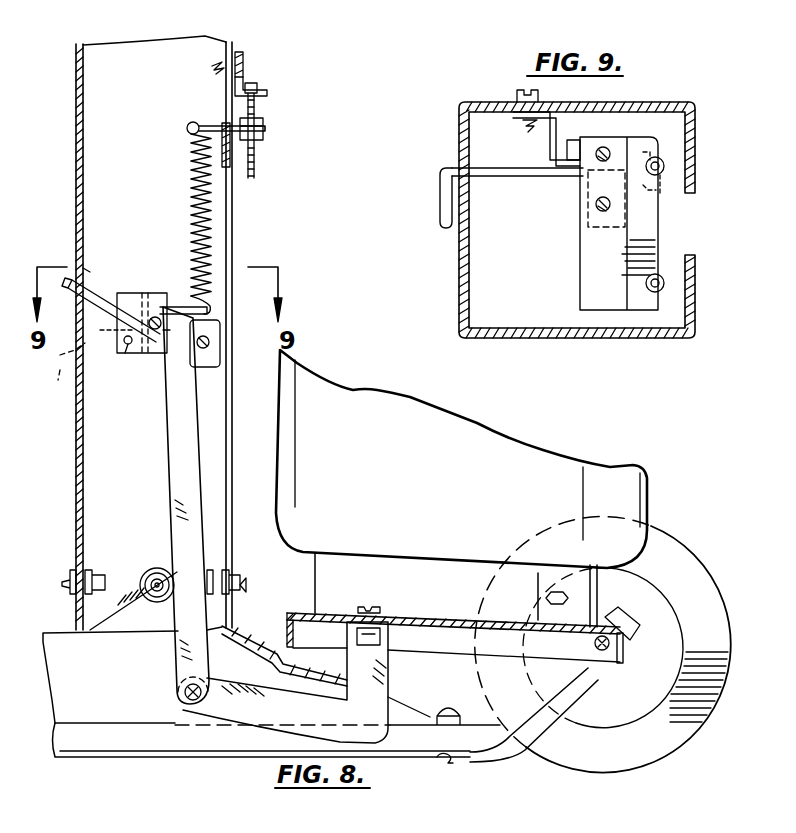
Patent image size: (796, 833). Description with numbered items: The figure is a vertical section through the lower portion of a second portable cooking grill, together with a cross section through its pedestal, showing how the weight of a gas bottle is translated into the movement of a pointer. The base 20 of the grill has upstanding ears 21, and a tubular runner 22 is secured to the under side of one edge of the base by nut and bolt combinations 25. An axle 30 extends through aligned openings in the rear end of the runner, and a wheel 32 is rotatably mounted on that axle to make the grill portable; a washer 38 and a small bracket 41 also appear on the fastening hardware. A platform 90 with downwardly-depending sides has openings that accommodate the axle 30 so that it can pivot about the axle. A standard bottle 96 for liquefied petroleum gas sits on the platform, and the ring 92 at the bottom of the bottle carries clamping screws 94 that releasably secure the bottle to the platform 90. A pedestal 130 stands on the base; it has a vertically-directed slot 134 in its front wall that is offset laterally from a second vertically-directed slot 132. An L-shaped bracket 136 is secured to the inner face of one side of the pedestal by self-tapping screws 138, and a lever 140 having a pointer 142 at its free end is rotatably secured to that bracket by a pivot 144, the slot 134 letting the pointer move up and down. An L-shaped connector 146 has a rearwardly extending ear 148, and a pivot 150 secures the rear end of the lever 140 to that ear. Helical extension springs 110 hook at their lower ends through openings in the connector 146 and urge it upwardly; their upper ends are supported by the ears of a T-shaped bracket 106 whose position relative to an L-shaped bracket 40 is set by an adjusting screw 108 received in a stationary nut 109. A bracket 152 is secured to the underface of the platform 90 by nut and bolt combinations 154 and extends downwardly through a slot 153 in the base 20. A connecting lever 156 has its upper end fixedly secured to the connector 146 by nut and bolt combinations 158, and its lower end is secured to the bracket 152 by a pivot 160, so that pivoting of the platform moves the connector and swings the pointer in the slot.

In FIG. 8, the base 20 is at (70, 628).
In FIG. 8, the upstanding ears 21 is at (88, 568).
In FIG. 8, the runner 22 is at (118, 745).
In FIG. 8, the nut and bolt combinations 25 is at (448, 760).
In FIG. 8, the axle 30 is at (606, 662).
In FIG. 8, the wheels 32 is at (665, 545).
In FIG. 8, the washer 38 is at (148, 600).
In FIG. 8, the L-shaped bracket 40 is at (262, 94).
In FIG. 8, the bracket tab 41 is at (245, 66).
In FIG. 8, the platform 90 is at (445, 621).
In FIG. 8, the ring 92 is at (315, 588).
In FIG. 8, the clamping screws 94 is at (568, 598).
In FIG. 8, the bottle 96 is at (457, 420).
In FIG. 8, the T-shaped bracket 106 is at (265, 130).
In FIG. 8, the adjusting screw 108 is at (258, 116).
In FIG. 8, the nut 109 is at (258, 145).
In FIG. 8, the helical extension springs 110 is at (190, 156).
In FIG. 9, the helical extension springs 110 is at (665, 166).
In FIG. 8, the pedestal 130 is at (76, 182).
In FIG. 9, the pedestal 130 is at (460, 262).
In FIG. 8, the vertically-directed slot 132 is at (233, 226).
In FIG. 9, the vertically-directed slot 132 is at (688, 255).
In FIG. 8, the vertically-directed slot 134 is at (84, 272).
In FIG. 9, the vertically-directed slot 134 is at (460, 165).
In FIG. 9, the L-shaped bracket 136 is at (548, 150).
In FIG. 8, the self-tapping screws 138 is at (128, 346).
In FIG. 9, the self-tapping screws 138 is at (516, 92).
In FIG. 8, the lever 140 is at (108, 300).
In FIG. 9, the lever 140 is at (510, 178).
In FIG. 8, the pointer 142 is at (70, 277).
In FIG. 9, the pointer 142 is at (443, 205).
In FIG. 8, the pivot 144 is at (153, 293).
In FIG. 9, the pivot 144 is at (578, 140).
In FIG. 8, the L-shaped connector 146 is at (163, 365).
In FIG. 9, the L-shaped connector 146 is at (592, 287).
In FIG. 8, the ear 148 is at (216, 365).
In FIG. 9, the ear 148 is at (662, 184).
In FIG. 8, the pivot 150 is at (216, 343).
In FIG. 9, the pivot 150 is at (665, 186).
In FIG. 8, the bracket 152 is at (240, 708).
In FIG. 8, the slot 153 is at (390, 690).
In FIG. 8, the nut and bolt combinations 154 is at (378, 608).
In FIG. 8, the connecting lever 156 is at (177, 509).
In FIG. 9, the connecting lever 156 is at (603, 228).
In FIG. 8, the nut and bolt combinations 158 is at (160, 300).
In FIG. 9, the nut and bolt combinations 158 is at (599, 160).
In FIG. 8, the pivot 160 is at (184, 694).